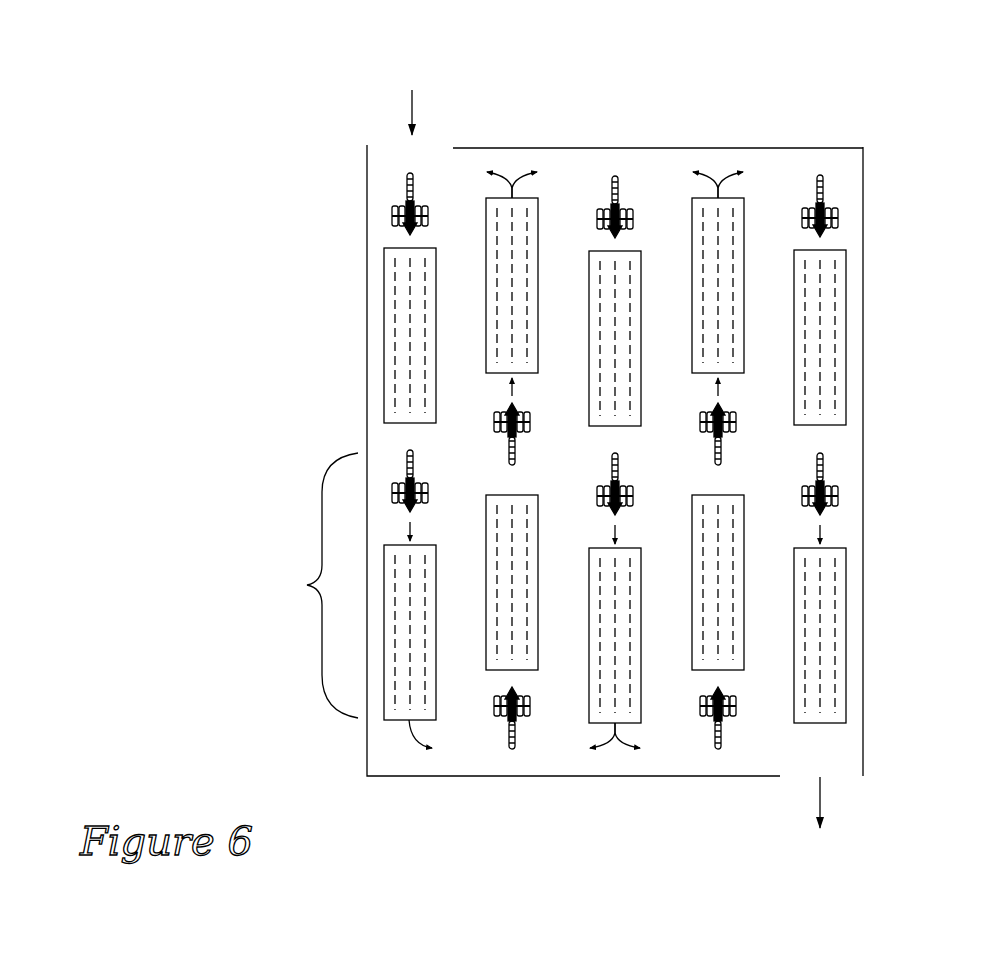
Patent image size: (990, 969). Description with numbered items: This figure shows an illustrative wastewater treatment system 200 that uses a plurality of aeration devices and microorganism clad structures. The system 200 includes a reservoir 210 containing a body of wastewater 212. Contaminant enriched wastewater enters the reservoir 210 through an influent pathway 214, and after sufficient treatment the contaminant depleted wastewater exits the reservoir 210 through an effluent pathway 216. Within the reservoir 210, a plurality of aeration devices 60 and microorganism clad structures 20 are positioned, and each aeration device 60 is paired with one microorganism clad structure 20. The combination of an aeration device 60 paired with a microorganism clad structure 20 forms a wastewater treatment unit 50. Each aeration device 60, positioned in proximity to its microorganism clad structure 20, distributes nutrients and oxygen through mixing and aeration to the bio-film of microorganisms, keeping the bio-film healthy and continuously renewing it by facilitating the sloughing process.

The wastewater treatment system 200 is at (800, 92).
The reservoir 210 is at (655, 441).
The body of wastewater 212 is at (664, 168).
The influent pathway 214 is at (408, 110).
The effluent pathway 216 is at (822, 792).
The microorganism clad structure 20 is at (380, 332).
The wastewater treatment unit 50 is at (318, 585).
The aeration device 60 is at (392, 180).